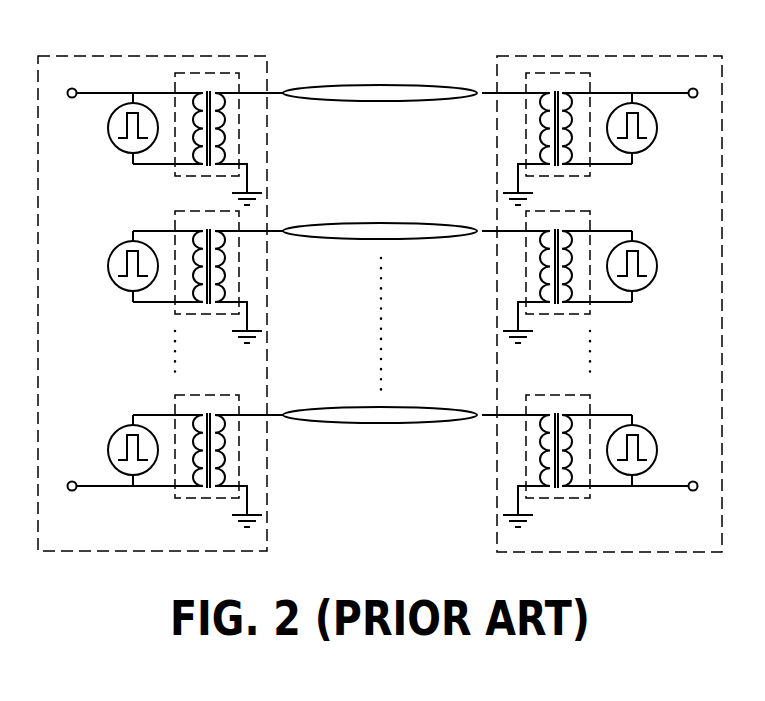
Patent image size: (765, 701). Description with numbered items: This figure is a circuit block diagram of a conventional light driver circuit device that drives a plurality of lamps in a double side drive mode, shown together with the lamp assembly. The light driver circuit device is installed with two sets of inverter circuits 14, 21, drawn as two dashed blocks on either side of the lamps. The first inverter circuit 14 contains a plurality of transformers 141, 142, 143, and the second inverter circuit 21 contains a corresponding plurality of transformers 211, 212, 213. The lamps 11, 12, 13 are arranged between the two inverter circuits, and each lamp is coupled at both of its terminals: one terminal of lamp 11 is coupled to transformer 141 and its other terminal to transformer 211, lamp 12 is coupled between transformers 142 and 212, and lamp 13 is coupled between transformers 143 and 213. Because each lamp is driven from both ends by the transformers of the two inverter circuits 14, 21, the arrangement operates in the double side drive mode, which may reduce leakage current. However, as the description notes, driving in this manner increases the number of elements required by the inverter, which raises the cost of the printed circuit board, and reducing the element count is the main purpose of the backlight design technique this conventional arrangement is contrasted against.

The inverter circuit 14 is at (98, 55).
The inverter circuit 21 is at (556, 55).
The lamp 11 is at (395, 84).
The lamp 12 is at (395, 222).
The lamp 13 is at (395, 407).
The transformer 141 is at (172, 173).
The transformer 142 is at (172, 311).
The transformer 143 is at (172, 495).
The transformer 211 is at (590, 172).
The transformer 212 is at (592, 309).
The transformer 213 is at (590, 494).